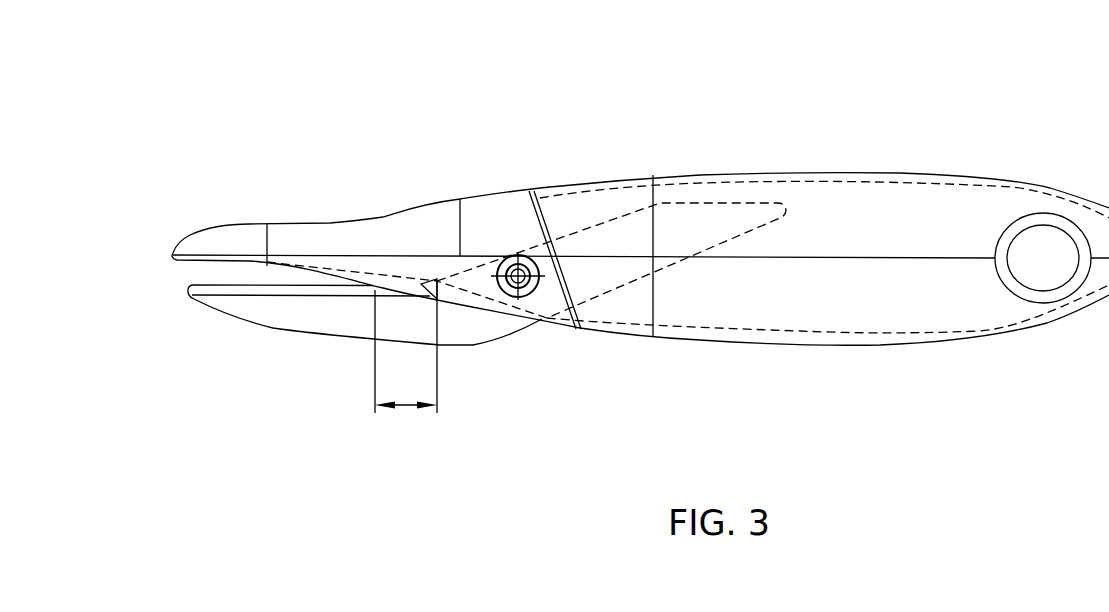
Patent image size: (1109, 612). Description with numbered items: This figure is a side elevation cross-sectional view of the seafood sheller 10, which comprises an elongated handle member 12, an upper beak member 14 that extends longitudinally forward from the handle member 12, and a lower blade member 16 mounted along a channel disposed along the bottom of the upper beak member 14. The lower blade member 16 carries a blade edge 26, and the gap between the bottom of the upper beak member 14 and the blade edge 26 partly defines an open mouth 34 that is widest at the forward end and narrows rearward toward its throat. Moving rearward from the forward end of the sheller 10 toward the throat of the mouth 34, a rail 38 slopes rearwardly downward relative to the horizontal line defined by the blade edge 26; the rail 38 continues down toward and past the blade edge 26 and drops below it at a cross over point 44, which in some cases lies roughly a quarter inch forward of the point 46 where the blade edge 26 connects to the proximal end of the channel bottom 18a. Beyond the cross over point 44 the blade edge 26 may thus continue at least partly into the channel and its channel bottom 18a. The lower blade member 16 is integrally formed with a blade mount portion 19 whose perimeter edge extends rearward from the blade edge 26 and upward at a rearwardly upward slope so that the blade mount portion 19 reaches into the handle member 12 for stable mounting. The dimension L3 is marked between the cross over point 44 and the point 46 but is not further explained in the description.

The seafood sheller 10 is at (862, 94).
The handle member 12 is at (935, 195).
The upper beak member 14 is at (483, 217).
The lower blade member 16 is at (467, 330).
The channel bottom 18a is at (388, 262).
The blade mount portion 19 is at (688, 237).
The blade edge 26 is at (232, 290).
The mouth 34 is at (180, 272).
The rail 38 is at (297, 284).
The cross over point 44 is at (363, 297).
The point 46 is at (438, 262).
The length L3 is at (406, 363).